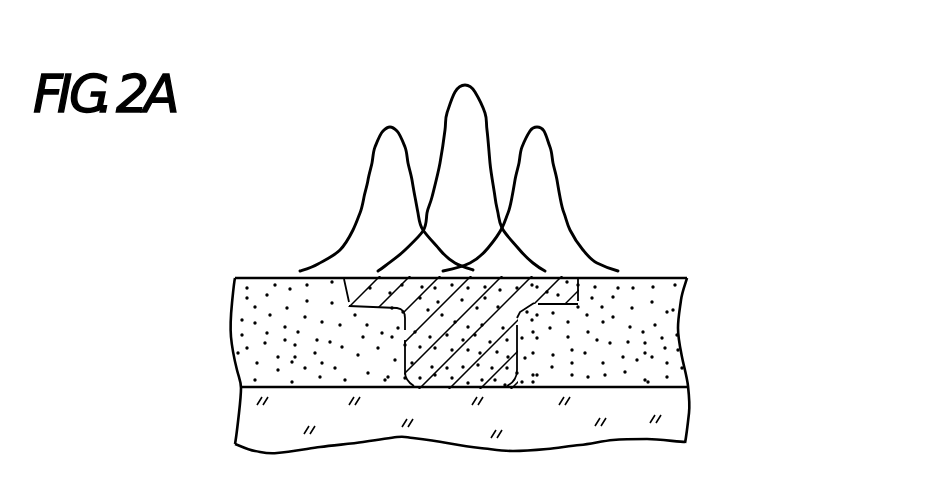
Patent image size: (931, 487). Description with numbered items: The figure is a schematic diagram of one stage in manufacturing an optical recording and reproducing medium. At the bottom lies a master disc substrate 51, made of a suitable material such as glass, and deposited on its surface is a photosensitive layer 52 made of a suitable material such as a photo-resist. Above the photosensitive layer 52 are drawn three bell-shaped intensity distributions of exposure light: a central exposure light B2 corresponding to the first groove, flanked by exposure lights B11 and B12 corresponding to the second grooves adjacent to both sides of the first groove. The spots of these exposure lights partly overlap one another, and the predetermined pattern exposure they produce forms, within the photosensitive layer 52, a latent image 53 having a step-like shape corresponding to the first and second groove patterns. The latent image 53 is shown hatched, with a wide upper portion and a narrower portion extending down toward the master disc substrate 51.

The exposure light B11 is at (393, 124).
The exposure light B2 is at (467, 83).
The exposure light B12 is at (538, 125).
The master disc substrate 51 is at (652, 424).
The photosensitive layer 52 is at (659, 332).
The latent image 53 is at (477, 345).